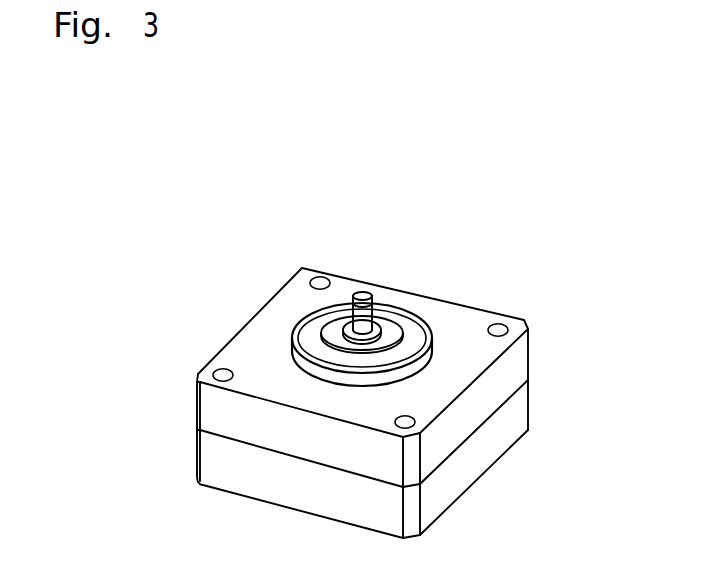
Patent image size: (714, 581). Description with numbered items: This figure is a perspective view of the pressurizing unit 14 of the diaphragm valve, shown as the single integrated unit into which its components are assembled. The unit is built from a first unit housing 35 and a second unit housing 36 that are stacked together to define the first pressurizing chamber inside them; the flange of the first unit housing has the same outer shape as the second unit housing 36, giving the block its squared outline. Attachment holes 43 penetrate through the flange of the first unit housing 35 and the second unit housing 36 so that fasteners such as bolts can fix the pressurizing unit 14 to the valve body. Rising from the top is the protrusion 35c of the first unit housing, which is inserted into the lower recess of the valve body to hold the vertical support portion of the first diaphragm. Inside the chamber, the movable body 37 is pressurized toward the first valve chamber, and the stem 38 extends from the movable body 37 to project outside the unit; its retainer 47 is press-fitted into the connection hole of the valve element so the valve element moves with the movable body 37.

The pressurizing unit 14 is at (567, 200).
The first unit housing 35 is at (521, 360).
The protrusion 35c is at (293, 356).
The second unit housing 36 is at (521, 417).
The movable body 37 is at (393, 327).
The stem 38 is at (383, 309).
The attachment holes 43 is at (219, 375).
The retainer 47 is at (365, 318).